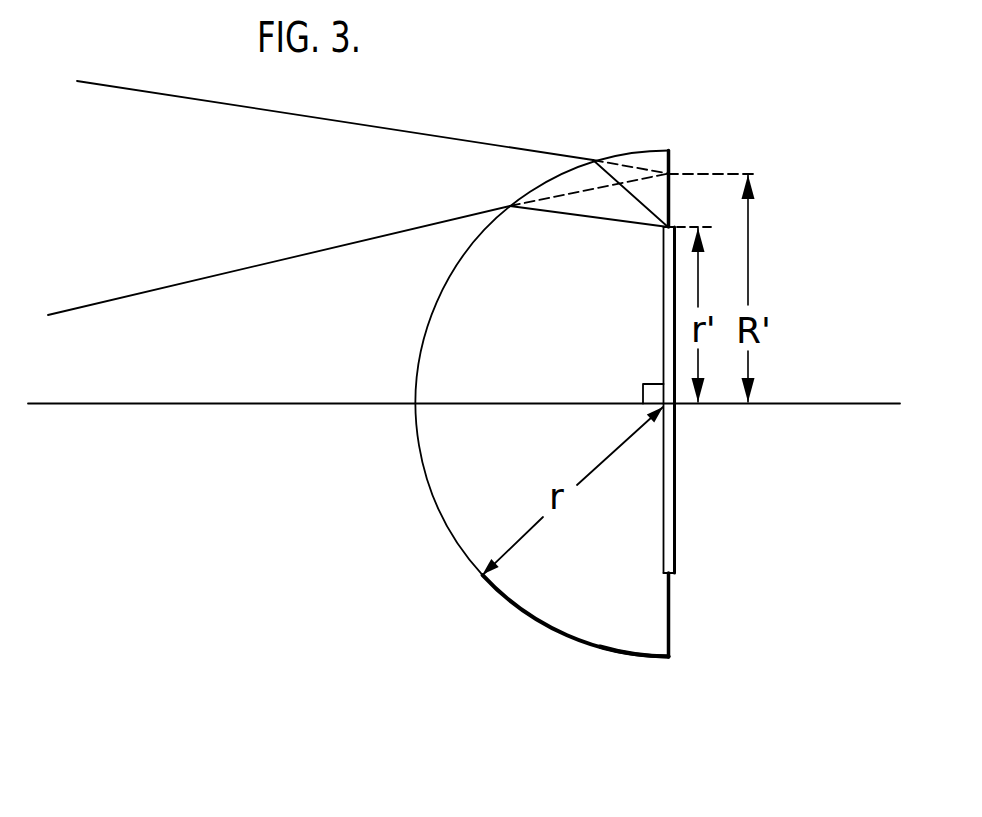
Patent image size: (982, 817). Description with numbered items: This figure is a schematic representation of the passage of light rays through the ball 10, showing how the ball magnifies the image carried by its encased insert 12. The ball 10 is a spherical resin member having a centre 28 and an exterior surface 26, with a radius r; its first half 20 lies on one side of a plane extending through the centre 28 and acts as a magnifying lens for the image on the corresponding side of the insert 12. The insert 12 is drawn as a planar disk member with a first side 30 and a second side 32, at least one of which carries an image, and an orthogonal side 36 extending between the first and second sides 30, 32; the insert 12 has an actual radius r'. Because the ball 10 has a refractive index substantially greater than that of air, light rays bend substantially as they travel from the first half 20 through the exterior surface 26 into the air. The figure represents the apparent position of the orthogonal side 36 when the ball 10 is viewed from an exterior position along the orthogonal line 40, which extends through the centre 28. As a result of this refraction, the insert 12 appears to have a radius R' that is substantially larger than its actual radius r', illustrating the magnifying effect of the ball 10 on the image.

The ball 10 is at (592, 653).
The insert 12 is at (677, 557).
The first half 20 is at (460, 475).
The exterior surface 26 is at (646, 662).
The centre 28 is at (672, 408).
The first side 30 is at (652, 542).
The second side 32 is at (683, 547).
The orthogonal side 36 is at (670, 227).
The orthogonal line 40 is at (464, 384).